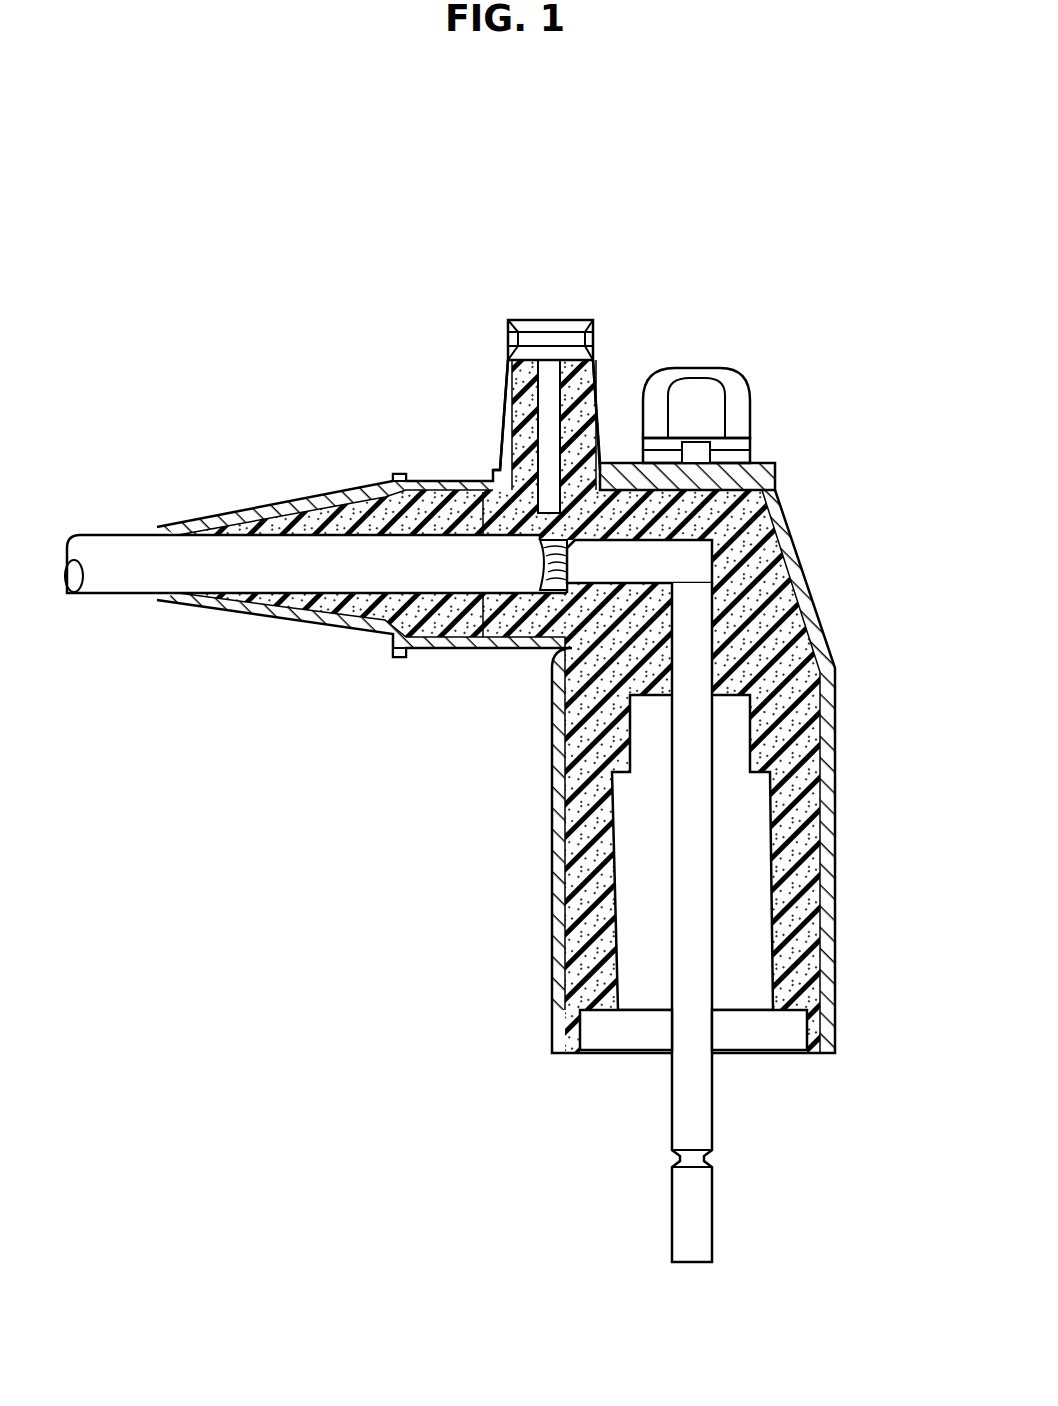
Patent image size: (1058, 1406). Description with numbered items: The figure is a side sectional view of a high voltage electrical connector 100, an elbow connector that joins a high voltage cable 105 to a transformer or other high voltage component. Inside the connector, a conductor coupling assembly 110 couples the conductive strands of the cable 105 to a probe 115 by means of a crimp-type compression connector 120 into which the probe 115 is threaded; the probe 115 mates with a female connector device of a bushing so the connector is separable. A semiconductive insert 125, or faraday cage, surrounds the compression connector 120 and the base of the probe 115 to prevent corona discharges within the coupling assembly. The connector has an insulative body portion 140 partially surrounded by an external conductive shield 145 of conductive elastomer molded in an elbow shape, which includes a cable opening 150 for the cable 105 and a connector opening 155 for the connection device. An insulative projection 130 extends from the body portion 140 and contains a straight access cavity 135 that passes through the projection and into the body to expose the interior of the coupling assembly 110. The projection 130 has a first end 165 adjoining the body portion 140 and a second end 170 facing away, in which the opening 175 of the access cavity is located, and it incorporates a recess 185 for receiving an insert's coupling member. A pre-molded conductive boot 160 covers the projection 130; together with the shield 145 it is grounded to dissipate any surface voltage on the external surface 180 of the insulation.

The high voltage electrical connector 100 is at (265, 392).
The high voltage cable 105 is at (104, 540).
The conductor coupling assembly 110 is at (743, 622).
The probe 115 is at (698, 1115).
The compression connector 120 is at (557, 600).
The semiconductive insert 125 is at (747, 555).
The insulative projection 130 is at (525, 355).
The access cavity 135 is at (507, 388).
The body portion 140 is at (836, 670).
The external conductive shield 145 is at (777, 463).
The cable opening 150 is at (170, 560).
The connector opening 155 is at (637, 997).
The projection conductive external shield 160 is at (600, 378).
The first end 165 is at (500, 490).
The second end 170 is at (548, 372).
The opening 175 is at (547, 355).
The external surface 180 is at (605, 410).
The recess 185 is at (593, 340).